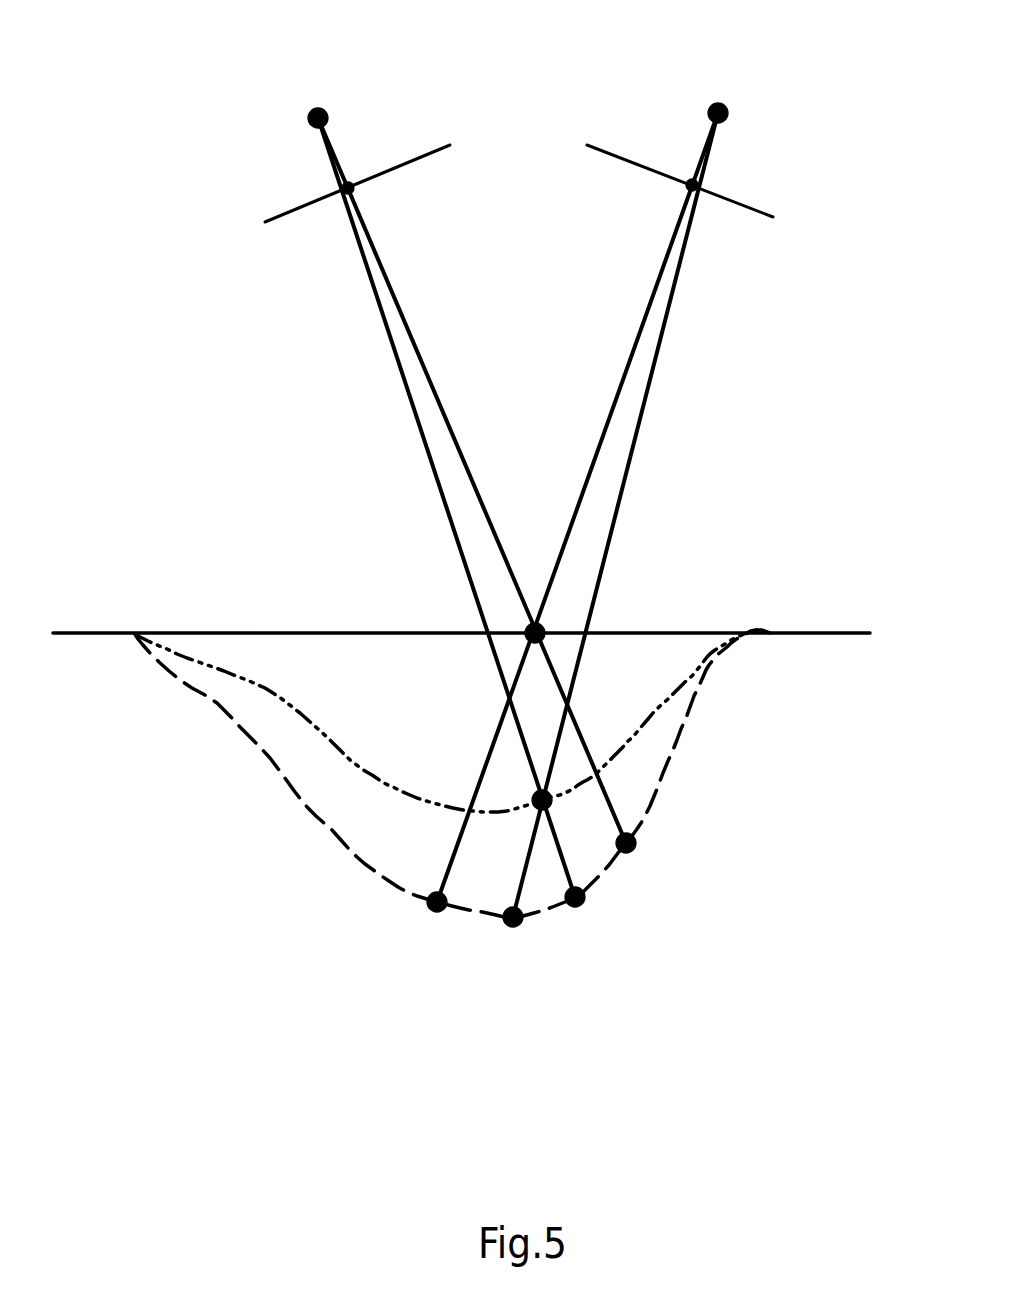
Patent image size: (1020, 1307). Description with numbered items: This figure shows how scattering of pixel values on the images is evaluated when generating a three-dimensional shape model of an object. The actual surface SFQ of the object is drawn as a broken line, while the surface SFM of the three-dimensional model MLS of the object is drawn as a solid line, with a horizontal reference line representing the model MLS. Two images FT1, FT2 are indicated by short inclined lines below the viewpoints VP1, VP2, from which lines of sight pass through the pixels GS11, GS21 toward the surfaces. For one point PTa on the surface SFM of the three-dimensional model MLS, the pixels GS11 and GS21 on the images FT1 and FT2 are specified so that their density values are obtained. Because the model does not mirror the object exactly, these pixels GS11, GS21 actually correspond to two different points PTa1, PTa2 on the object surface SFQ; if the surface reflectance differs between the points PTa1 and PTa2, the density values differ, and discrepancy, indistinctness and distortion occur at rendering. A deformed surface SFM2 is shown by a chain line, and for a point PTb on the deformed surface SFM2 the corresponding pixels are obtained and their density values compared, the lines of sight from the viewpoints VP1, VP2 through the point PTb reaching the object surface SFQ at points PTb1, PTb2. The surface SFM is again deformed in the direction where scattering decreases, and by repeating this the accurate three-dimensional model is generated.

The first viewpoint VP1 is at (318, 108).
The second viewpoint VP2 is at (719, 103).
The pixel GS11 is at (356, 189).
The pixel GS21 is at (688, 188).
The image FT1 is at (302, 214).
The image FT2 is at (747, 207).
The three-dimensional model MLS is at (823, 627).
The surface of the three-dimensional model SFM is at (215, 632).
The deformed surface SFM2 is at (313, 727).
The surface of the object SFQ is at (387, 873).
The point PTa is at (534, 623).
The point PTb is at (540, 808).
The point PTa1 is at (636, 847).
The point PTa2 is at (430, 909).
The projection of point b from first viewpoint PTb1 is at (577, 906).
The projection of point b from second viewpoint PTb2 is at (513, 927).